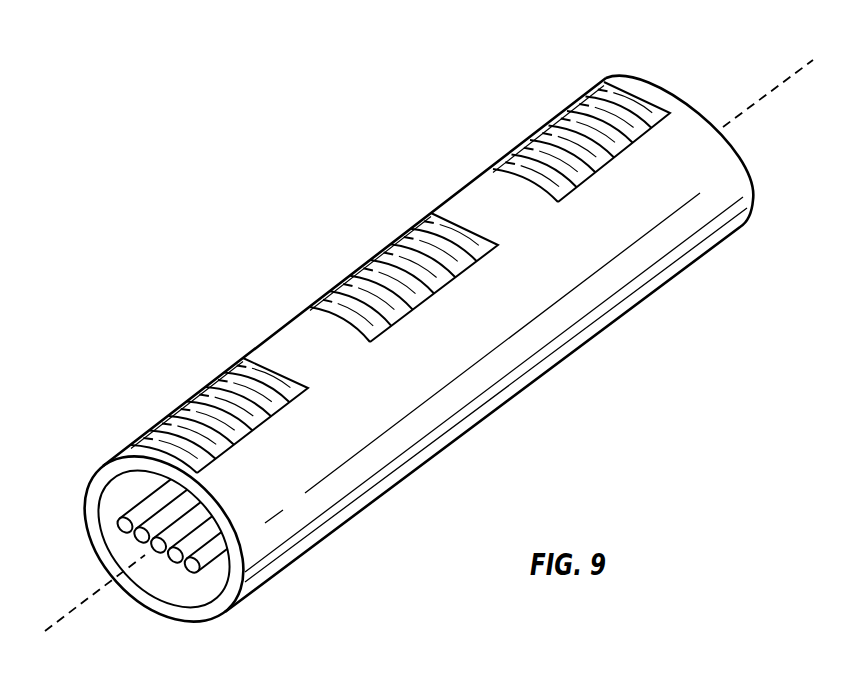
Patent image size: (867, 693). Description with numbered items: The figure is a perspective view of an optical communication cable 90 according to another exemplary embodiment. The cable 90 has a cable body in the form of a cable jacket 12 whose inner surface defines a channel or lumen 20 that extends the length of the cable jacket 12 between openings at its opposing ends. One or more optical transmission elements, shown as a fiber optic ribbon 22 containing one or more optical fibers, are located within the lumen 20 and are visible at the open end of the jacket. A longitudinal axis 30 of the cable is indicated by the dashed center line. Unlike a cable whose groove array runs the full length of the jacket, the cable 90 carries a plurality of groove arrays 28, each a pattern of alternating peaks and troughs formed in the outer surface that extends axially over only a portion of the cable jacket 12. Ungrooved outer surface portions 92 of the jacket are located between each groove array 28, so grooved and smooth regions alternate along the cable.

The optical communication cable 90 is at (416, 342).
The cable jacket 12 is at (93, 487).
The lumen 20 is at (144, 562).
The fiber optic ribbon 22 is at (117, 527).
The groove array 28 is at (183, 393).
The longitudinal axis 30 is at (732, 121).
The ungrooved outer surface portion 92 is at (530, 215).